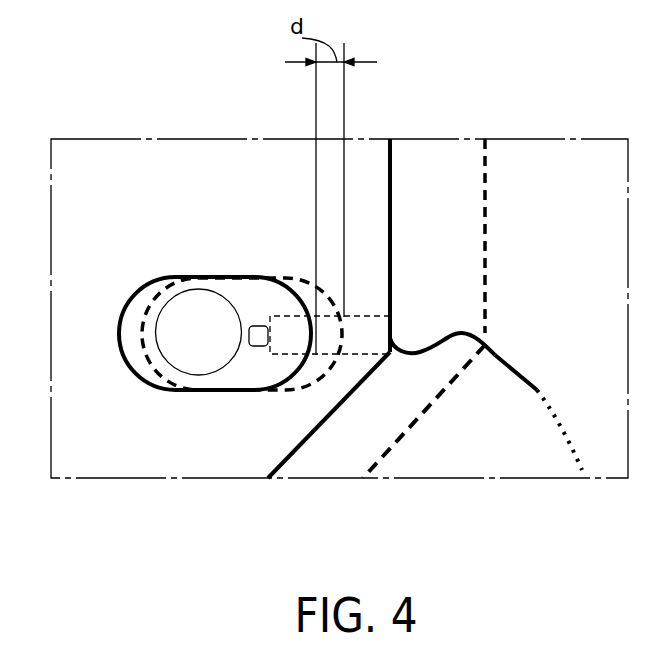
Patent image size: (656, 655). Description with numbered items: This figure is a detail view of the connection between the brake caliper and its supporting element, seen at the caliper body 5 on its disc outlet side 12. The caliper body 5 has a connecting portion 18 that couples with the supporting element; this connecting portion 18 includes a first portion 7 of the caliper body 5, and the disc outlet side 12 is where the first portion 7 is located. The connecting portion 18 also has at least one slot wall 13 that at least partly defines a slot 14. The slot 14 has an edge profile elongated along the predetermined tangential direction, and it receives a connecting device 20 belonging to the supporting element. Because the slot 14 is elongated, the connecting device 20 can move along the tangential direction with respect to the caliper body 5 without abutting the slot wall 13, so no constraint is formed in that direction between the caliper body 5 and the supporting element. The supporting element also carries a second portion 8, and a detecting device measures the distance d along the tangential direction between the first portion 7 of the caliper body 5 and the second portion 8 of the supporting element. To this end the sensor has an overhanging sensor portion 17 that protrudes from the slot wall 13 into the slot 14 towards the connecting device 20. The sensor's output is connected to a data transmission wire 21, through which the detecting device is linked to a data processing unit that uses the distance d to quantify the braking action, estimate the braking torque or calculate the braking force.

The caliper body 5 is at (378, 168).
The first portion 7 is at (257, 342).
The second portion 8 is at (198, 355).
The disc outlet side 12 is at (370, 202).
The slot wall 13 is at (236, 370).
The slot 14 is at (253, 295).
The overhanging sensor portion 17 is at (290, 345).
The connecting portion 18 is at (262, 237).
The connecting device 20 is at (187, 330).
The data transmission wire 21 is at (527, 377).